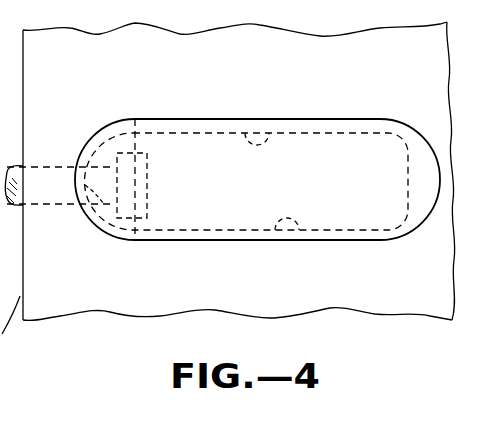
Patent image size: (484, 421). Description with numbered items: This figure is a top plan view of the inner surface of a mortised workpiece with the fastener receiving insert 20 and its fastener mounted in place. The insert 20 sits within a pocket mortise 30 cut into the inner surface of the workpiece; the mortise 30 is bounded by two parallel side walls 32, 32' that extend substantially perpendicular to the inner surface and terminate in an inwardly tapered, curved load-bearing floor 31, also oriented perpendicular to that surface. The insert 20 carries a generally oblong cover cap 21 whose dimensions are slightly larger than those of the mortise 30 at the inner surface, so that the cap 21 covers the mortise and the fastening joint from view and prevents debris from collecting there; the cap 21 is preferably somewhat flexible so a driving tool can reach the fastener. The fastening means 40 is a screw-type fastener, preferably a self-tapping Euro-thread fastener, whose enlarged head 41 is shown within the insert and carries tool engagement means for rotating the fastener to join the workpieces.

The fastener receiving insert 20 is at (148, 118).
The cover cap 21 is at (340, 188).
The mortise 30 is at (204, 156).
The curved floor 31 is at (104, 208).
The side wall 32 is at (268, 117).
The side wall 32' is at (268, 247).
The fastening means 40 is at (147, 188).
The enlarged head 41 is at (143, 222).